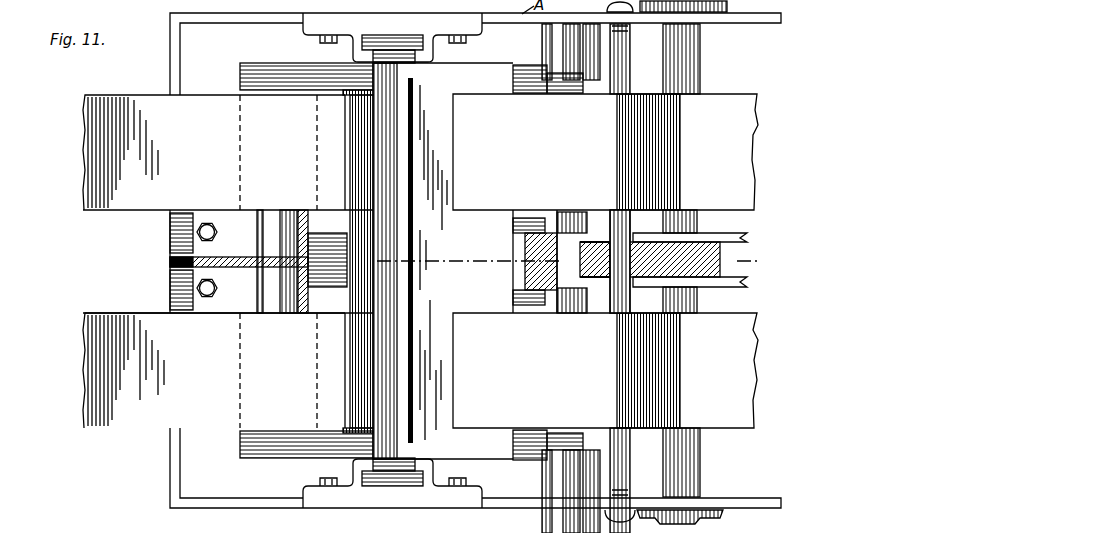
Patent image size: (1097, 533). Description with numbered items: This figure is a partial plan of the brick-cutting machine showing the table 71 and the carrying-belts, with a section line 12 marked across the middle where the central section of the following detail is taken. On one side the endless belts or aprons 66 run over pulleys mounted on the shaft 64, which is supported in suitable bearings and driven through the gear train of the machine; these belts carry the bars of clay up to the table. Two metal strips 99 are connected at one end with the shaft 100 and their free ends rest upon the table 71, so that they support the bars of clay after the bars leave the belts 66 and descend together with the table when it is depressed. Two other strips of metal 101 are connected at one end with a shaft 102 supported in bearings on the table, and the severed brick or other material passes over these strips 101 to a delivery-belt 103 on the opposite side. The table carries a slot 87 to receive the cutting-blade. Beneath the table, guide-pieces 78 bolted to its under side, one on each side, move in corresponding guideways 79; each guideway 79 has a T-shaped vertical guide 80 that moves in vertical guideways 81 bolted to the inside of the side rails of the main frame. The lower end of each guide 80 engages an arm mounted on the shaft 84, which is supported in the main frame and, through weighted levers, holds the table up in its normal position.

The section line 12 is at (166, 262).
The shaft 64 is at (690, 78).
The endless belts or aprons 66 is at (719, 261).
The table 71 is at (433, 236).
The guide-pieces 78 is at (558, 438).
The guideways 79 is at (316, 66).
The T-shaped vertical guide 80 is at (368, 46).
The vertical guideways 81 is at (389, 518).
The shaft 84 is at (577, 303).
The slot 87 is at (377, 261).
The metal strips 99 is at (566, 261).
The shaft 100 is at (620, 82).
The strips of metal 101 is at (292, 261).
The shaft 102 is at (360, 272).
The delivery-belt 103 is at (133, 176).